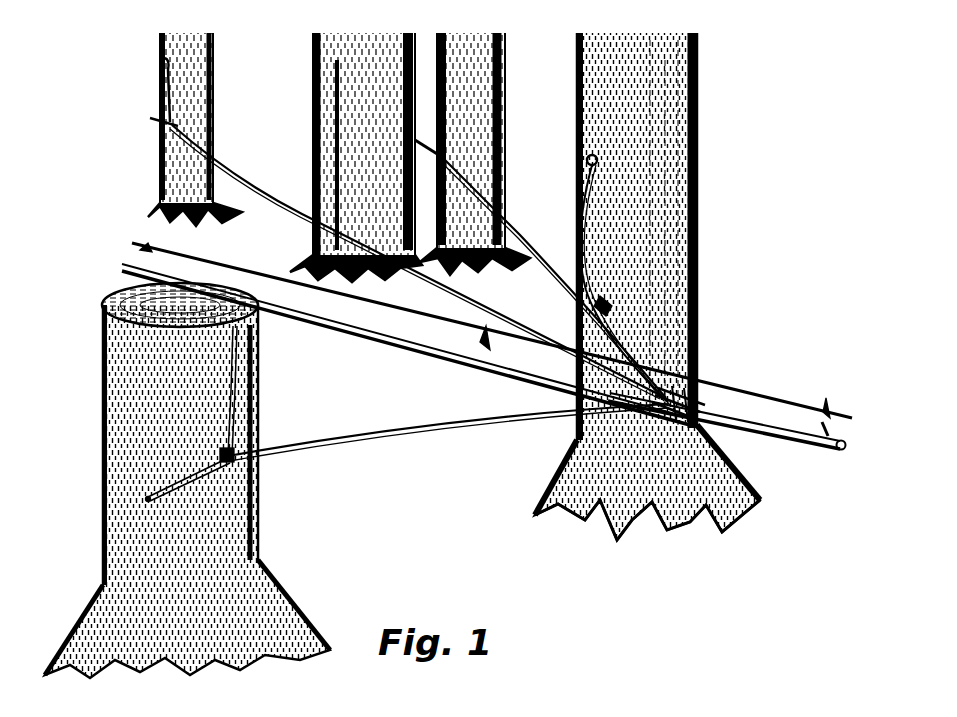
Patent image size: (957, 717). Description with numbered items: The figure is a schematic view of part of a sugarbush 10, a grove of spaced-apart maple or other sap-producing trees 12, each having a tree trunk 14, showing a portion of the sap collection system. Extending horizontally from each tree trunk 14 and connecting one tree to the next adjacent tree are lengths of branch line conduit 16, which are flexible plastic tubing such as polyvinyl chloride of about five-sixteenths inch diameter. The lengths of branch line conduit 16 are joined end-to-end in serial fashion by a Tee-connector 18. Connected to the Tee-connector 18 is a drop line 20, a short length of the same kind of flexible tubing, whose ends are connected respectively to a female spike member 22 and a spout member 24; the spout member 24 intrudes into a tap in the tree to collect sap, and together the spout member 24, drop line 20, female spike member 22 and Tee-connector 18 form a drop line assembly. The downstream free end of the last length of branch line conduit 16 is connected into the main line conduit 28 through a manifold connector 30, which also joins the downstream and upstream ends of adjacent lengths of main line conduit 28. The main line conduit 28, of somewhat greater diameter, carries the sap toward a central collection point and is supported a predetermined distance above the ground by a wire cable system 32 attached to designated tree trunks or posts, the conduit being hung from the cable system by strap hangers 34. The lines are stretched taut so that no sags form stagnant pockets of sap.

The sugarbush 10 is at (145, 145).
The maple tree 12 is at (700, 195).
The tree trunk 14 is at (140, 395).
The branch line conduit 16 is at (264, 185).
The Tee-connector 18 is at (248, 452).
The drop line 20 is at (258, 383).
The female spike member 22 is at (212, 445).
The spout member 24 is at (322, 105).
The main line conduit 28 is at (408, 342).
The manifold connector 30 is at (728, 392).
The wire cable system 32 is at (775, 393).
The strap hanger 34 is at (486, 360).